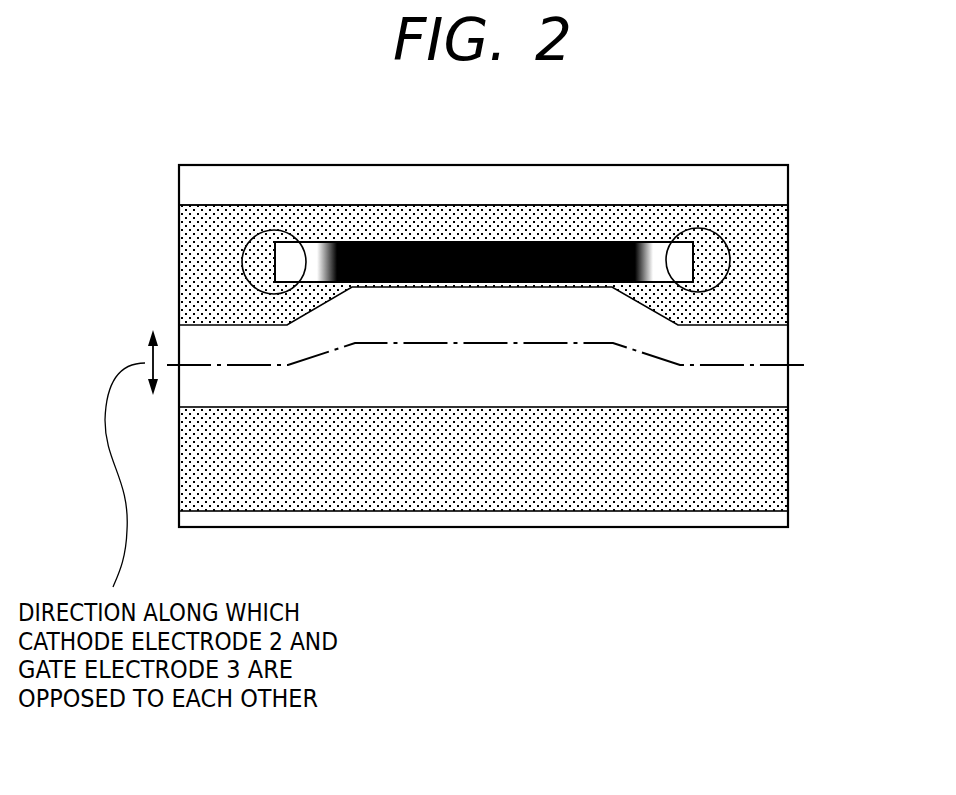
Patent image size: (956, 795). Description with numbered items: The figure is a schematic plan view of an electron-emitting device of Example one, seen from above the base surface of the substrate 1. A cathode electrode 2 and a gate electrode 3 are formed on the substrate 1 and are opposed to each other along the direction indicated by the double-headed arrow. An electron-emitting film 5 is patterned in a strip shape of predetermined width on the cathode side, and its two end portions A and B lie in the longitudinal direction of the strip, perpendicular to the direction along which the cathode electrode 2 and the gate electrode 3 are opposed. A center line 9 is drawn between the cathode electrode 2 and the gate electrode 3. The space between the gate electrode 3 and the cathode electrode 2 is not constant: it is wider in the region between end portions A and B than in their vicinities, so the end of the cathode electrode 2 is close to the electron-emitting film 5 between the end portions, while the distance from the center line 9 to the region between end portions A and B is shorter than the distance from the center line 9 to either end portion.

The substrate 1 is at (777, 180).
The cathode electrode 2 is at (772, 245).
The gate electrode 3 is at (768, 453).
The electron-emitting film 5 is at (427, 242).
The center line 9 is at (797, 365).
The end portion A is at (273, 230).
The end portion B is at (704, 229).